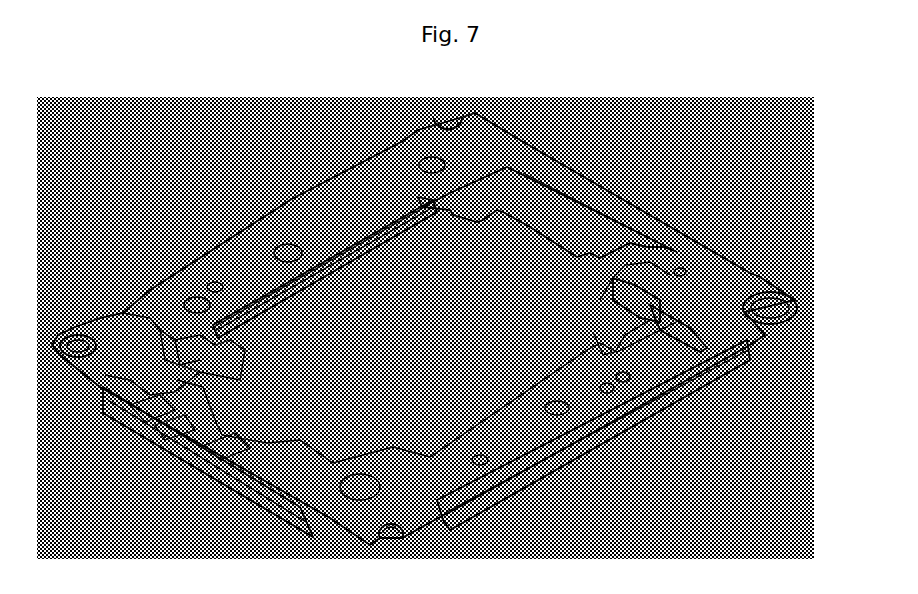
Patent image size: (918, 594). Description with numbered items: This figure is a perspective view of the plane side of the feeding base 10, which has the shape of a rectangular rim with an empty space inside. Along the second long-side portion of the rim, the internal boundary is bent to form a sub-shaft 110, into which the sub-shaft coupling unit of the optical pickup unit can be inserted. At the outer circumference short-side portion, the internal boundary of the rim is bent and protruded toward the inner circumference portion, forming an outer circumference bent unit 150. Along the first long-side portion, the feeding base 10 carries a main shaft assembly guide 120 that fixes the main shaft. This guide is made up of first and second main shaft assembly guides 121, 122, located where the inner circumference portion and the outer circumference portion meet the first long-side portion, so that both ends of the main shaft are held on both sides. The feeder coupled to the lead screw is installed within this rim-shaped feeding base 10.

The feeding base 10 is at (118, 168).
The sub-shaft 110 is at (330, 275).
The outer circumference bent unit 150 is at (535, 237).
The main shaft assembly guide 120 is at (662, 500).
The first main shaft assembly guide 121 is at (330, 463).
The second main shaft assembly guide 122 is at (620, 298).